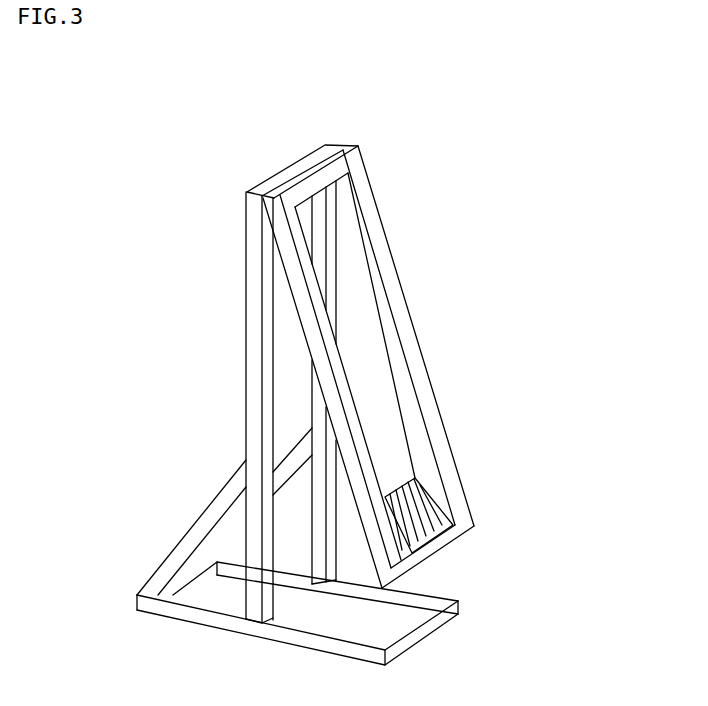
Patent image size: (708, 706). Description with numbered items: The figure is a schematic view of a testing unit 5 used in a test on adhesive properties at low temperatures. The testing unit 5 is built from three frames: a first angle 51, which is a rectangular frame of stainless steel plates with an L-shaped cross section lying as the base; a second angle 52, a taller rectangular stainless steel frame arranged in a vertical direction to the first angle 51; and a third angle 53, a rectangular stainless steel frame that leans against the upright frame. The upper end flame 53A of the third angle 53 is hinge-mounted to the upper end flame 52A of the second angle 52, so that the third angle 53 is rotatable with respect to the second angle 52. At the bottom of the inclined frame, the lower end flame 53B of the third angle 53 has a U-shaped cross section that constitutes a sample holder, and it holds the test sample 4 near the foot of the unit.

The testing unit 5 is at (601, 194).
The first angle 51 is at (464, 607).
The second angle 52 is at (246, 263).
The upper end flame of the second angle 52A is at (283, 173).
The third angle 53 is at (385, 243).
The upper end flame of the third angle 53A is at (327, 183).
The lower end flame of the third angle 53B is at (466, 537).
The test sample 4 is at (420, 491).